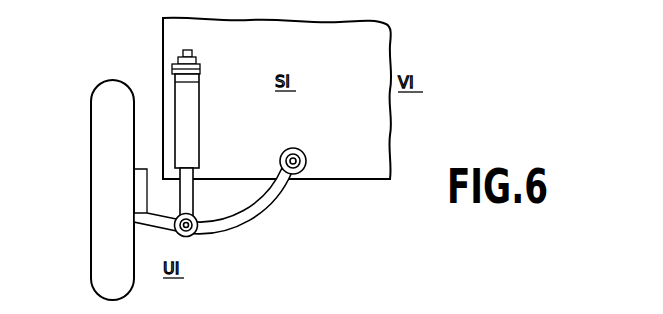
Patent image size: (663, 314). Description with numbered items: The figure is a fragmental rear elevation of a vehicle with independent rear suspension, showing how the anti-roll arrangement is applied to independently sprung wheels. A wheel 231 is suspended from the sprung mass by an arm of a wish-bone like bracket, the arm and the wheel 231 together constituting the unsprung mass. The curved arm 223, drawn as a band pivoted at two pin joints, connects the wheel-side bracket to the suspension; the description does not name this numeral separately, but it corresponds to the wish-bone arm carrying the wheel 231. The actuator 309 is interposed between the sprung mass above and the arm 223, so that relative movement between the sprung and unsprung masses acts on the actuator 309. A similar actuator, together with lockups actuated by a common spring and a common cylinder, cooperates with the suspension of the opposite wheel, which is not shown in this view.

The wheel 231 is at (94, 167).
The curved arm 223 is at (273, 196).
The actuator 309 is at (195, 113).